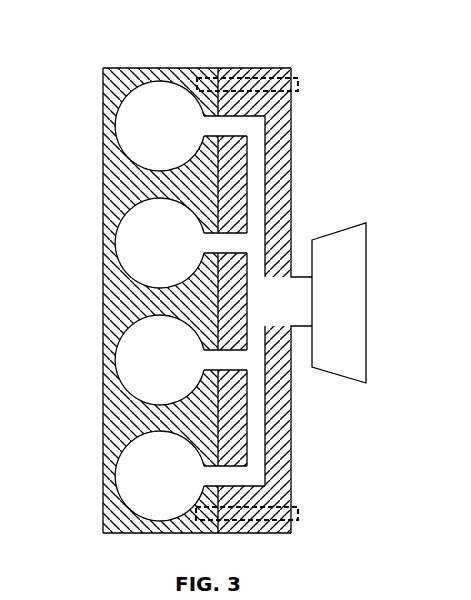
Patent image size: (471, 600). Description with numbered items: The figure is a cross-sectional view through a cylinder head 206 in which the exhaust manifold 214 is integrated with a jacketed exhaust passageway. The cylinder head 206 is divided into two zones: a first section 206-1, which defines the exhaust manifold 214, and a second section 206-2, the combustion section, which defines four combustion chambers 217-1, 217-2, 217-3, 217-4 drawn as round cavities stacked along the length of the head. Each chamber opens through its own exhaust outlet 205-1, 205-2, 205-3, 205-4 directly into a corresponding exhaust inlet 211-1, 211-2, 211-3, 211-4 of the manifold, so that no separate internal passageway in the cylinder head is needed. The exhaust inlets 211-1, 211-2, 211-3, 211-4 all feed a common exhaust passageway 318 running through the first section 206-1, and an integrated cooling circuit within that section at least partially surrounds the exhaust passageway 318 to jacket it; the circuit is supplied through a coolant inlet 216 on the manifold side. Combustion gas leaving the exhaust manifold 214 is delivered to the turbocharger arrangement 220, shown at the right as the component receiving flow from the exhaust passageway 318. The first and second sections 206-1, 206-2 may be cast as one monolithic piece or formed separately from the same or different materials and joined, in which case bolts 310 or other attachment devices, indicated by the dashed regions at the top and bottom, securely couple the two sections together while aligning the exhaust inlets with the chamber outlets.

The cylinder head casting 206 is at (193, 279).
The first section 206-1 is at (288, 274).
The second section 206-2 is at (122, 274).
The exhaust manifold 214 is at (297, 113).
The coolant inlet 216 is at (86, 109).
The combustion chamber 217-1 is at (131, 125).
The combustion chamber 217-2 is at (132, 252).
The combustion chamber 217-3 is at (130, 365).
The combustion chamber 217-4 is at (134, 468).
The exhaust outlet 205-1 is at (205, 131).
The exhaust outlet 205-2 is at (206, 247).
The exhaust outlet 205-3 is at (206, 366).
The exhaust outlet 205-4 is at (204, 483).
The exhaust inlet 211-1 is at (225, 128).
The exhaust inlet 211-2 is at (228, 243).
The exhaust inlet 211-3 is at (227, 364).
The exhaust inlet 211-4 is at (228, 478).
The exhaust passageway 318 is at (271, 301).
The turbocharger arrangement 220 is at (370, 236).
The bolts 310 is at (300, 82).